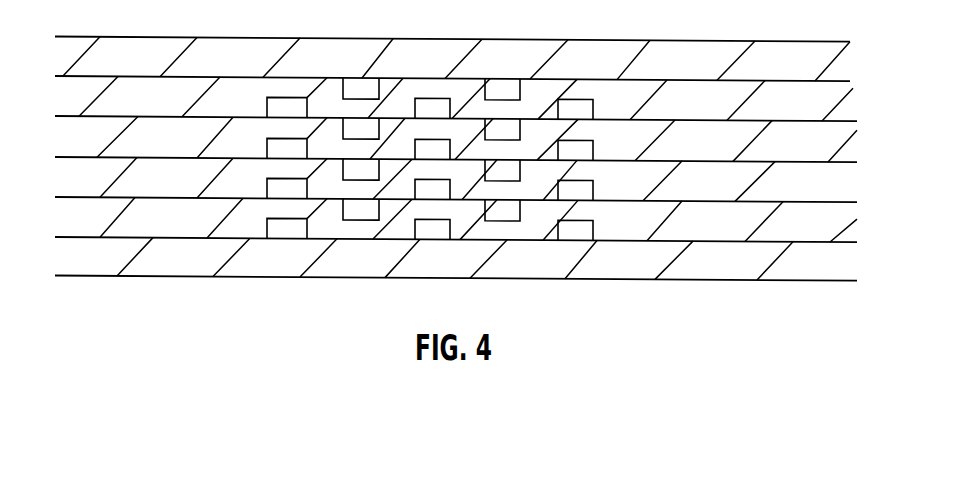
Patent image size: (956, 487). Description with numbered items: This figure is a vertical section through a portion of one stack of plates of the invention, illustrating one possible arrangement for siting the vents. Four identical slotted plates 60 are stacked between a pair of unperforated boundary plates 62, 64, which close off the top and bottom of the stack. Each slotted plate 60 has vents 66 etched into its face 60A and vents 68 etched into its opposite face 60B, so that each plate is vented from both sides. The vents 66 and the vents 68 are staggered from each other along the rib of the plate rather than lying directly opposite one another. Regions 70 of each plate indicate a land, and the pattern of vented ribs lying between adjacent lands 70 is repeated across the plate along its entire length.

The slotted plate 60 is at (848, 110).
The face 60A is at (456, 49).
The opposite face 60B is at (455, 273).
The unperforated boundary plate 62 is at (597, 66).
The unperforated boundary plate 64 is at (694, 258).
The vent 66 is at (363, 86).
The vent 68 is at (437, 103).
The land 70 is at (176, 103).